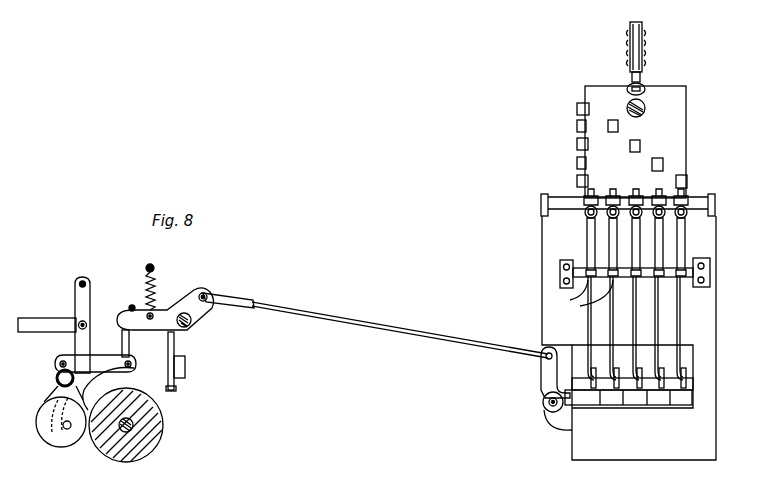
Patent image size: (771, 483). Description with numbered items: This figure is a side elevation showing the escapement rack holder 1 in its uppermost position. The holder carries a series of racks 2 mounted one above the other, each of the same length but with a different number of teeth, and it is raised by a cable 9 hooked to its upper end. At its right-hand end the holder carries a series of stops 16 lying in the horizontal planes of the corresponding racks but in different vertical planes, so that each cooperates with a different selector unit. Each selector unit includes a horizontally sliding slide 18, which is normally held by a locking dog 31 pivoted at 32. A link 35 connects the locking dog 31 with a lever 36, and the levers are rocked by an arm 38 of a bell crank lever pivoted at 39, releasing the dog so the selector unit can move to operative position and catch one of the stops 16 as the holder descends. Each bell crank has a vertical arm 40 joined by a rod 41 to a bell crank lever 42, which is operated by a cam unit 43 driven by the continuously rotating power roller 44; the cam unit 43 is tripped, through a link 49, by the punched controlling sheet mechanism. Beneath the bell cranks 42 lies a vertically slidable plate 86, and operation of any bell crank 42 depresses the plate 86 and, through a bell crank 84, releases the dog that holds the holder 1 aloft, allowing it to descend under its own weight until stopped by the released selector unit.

The escapement rack holder 1 is at (664, 93).
The racks 2 is at (576, 143).
The cable 9 is at (646, 52).
The stops 16 is at (588, 102).
The slide 18 is at (655, 240).
The locking dog 31 is at (578, 299).
The pivot 32 is at (587, 270).
The link 35 is at (656, 312).
The lever 36 is at (688, 373).
The arm 38 is at (608, 398).
The pivot 39 is at (546, 408).
The vertical arm 40 is at (547, 381).
The rod 41 is at (417, 336).
The bell crank lever 42 is at (200, 318).
The cam unit 43 is at (38, 428).
The power roller 44 is at (165, 433).
The link 49 is at (42, 323).
The bell crank 84 is at (178, 388).
The slidable plate 86 is at (176, 341).